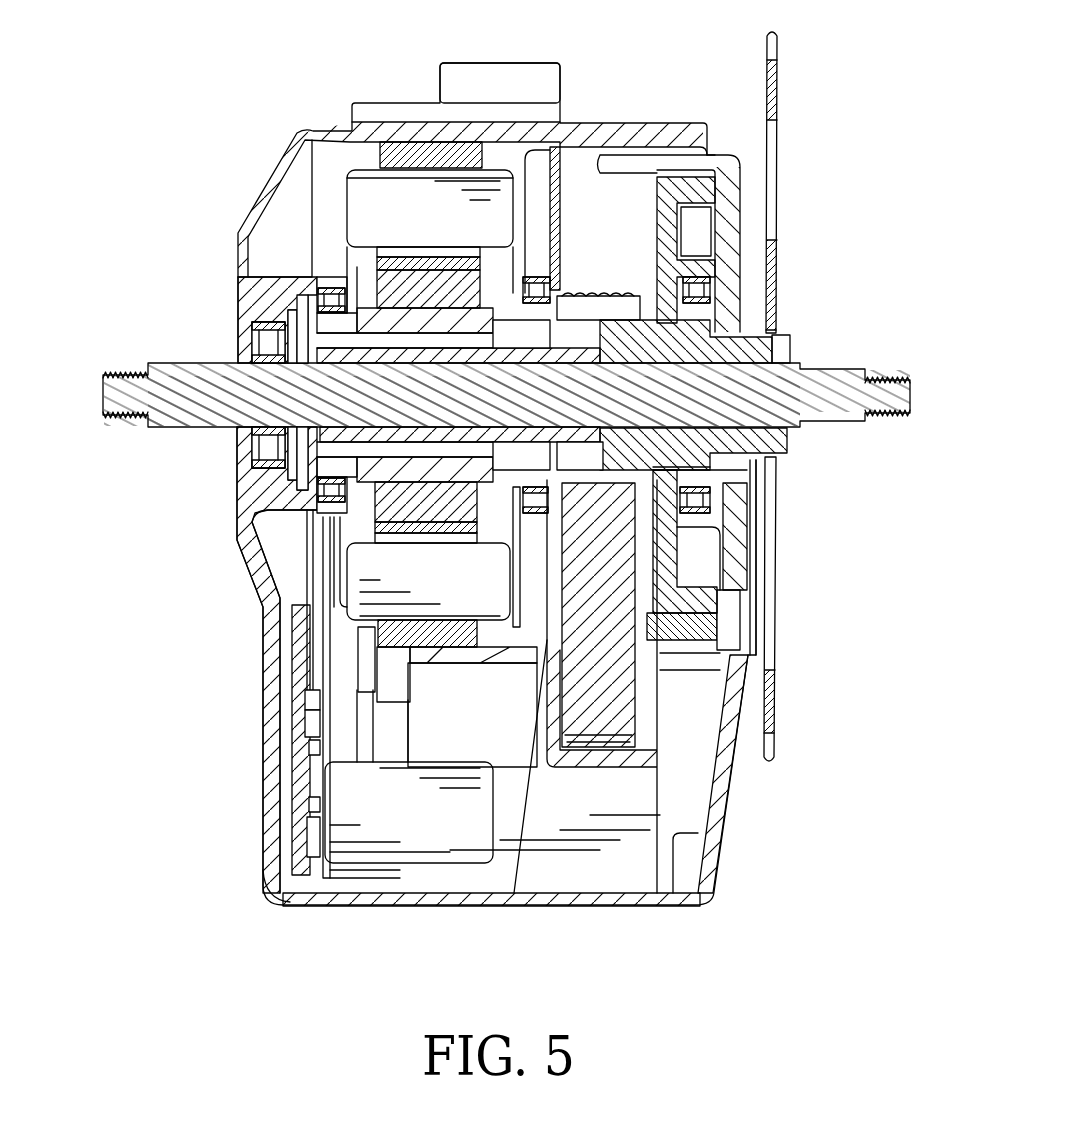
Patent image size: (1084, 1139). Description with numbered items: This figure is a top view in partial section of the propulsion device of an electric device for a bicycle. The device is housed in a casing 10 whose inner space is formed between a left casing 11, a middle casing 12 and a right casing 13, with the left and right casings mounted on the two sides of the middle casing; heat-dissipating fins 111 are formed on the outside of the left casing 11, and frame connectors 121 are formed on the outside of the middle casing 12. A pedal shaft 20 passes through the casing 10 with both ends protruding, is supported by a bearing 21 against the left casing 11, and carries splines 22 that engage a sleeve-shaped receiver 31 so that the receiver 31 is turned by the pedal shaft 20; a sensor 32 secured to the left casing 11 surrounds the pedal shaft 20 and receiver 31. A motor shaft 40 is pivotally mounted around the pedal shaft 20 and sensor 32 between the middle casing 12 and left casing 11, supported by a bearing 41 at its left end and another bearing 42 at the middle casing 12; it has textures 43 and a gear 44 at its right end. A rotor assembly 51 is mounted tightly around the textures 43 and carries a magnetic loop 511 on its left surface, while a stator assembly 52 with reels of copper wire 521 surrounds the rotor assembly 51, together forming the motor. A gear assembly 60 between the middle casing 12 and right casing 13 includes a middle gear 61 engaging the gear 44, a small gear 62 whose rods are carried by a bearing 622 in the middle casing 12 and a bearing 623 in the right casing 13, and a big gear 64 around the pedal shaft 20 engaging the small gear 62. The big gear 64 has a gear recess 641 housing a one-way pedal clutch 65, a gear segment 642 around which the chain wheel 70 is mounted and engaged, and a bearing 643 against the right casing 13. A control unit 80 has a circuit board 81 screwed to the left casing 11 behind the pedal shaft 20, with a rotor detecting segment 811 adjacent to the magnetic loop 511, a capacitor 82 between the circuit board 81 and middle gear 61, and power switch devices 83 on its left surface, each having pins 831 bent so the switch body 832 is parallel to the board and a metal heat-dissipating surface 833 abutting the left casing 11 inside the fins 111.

The casing 10 is at (182, 848).
The left casing 11 is at (246, 630).
The middle casing 12 is at (582, 905).
The right casing 13 is at (712, 843).
The heat-dissipating fins 111 is at (268, 868).
The frame connectors 121 is at (500, 70).
The pedal shaft 20 is at (155, 420).
The bearing 21 is at (275, 340).
The splines 22 is at (400, 447).
The receiver 31 is at (435, 444).
The sensor 32 is at (350, 495).
The motor shaft 40 is at (370, 317).
The bearing 41 is at (330, 300).
The bearing 42 is at (533, 290).
The textures 43 is at (403, 247).
The gear 44 is at (595, 310).
The rotor assembly 51 is at (427, 280).
The magnetic loop 511 is at (328, 530).
The stator assembly 52 is at (432, 135).
The reels of copper wire 521 is at (383, 182).
The gear assembly 60 is at (808, 450).
The middle gear 61 is at (630, 705).
The small gear 62 is at (700, 630).
The bearing 622 is at (540, 648).
The bearing 623 is at (735, 616).
The big gear 64 is at (744, 303).
The gear recess 641 is at (700, 293).
The gear segment 642 is at (778, 345).
The bearing 643 is at (700, 262).
The one-way pedal clutch 65 is at (722, 470).
The chain wheel 70 is at (774, 92).
The control unit 80 is at (306, 778).
The circuit board 81 is at (325, 870).
The rotor detecting segment 811 is at (332, 535).
The capacitor 82 is at (397, 852).
The power switch devices 83 is at (310, 835).
The pins 831 is at (313, 750).
The switch body 832 is at (312, 698).
The metal heat-dissipating surface 833 is at (312, 714).